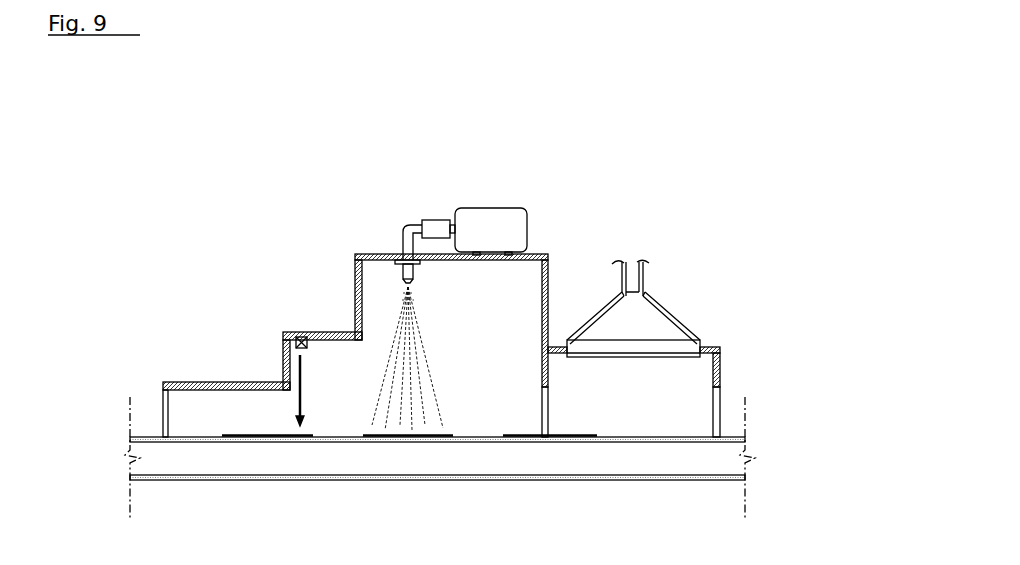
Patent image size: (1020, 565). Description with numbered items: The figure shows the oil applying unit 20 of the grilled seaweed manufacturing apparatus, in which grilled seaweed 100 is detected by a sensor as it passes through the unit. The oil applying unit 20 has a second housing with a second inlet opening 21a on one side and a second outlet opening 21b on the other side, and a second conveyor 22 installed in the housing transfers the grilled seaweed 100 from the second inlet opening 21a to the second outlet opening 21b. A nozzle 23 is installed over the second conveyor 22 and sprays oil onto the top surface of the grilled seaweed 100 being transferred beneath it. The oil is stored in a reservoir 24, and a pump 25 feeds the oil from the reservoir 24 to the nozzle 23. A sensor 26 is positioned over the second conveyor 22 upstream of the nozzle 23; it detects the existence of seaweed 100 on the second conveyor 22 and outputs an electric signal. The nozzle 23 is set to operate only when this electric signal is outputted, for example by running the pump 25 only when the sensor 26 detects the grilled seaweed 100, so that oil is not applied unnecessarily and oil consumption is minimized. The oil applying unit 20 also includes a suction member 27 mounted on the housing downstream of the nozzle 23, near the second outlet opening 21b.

The oil applying unit 20 is at (672, 188).
The second inlet opening 21a is at (165, 420).
The second outlet opening 21b is at (718, 393).
The second conveyor 22 is at (205, 437).
The nozzle 23 is at (402, 276).
The reservoir 24 is at (495, 210).
The pump 25 is at (437, 220).
The sensor 26 is at (299, 336).
The suction member 27 is at (668, 313).
The seaweed 100 is at (236, 432).